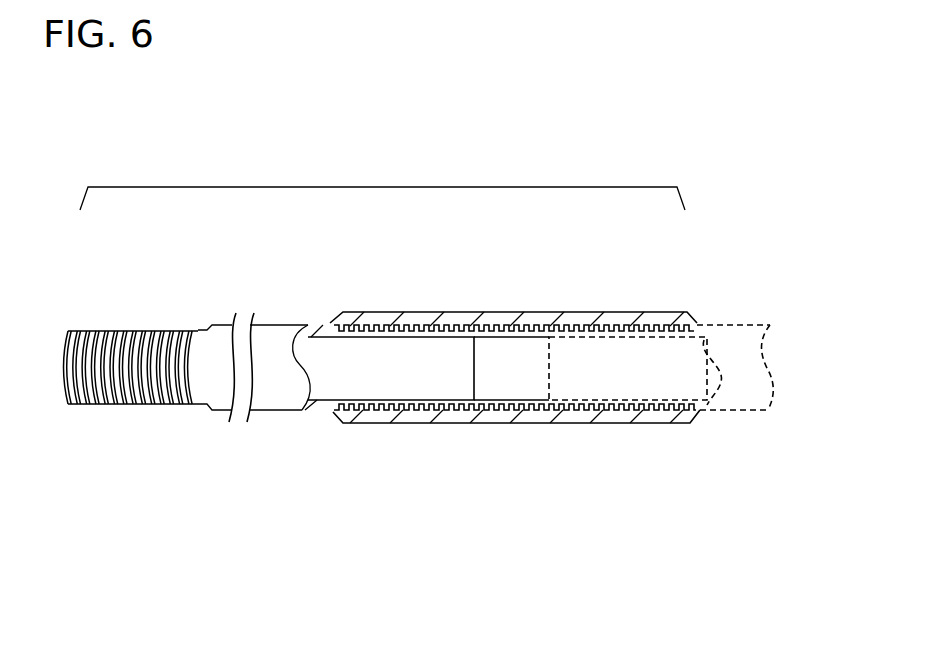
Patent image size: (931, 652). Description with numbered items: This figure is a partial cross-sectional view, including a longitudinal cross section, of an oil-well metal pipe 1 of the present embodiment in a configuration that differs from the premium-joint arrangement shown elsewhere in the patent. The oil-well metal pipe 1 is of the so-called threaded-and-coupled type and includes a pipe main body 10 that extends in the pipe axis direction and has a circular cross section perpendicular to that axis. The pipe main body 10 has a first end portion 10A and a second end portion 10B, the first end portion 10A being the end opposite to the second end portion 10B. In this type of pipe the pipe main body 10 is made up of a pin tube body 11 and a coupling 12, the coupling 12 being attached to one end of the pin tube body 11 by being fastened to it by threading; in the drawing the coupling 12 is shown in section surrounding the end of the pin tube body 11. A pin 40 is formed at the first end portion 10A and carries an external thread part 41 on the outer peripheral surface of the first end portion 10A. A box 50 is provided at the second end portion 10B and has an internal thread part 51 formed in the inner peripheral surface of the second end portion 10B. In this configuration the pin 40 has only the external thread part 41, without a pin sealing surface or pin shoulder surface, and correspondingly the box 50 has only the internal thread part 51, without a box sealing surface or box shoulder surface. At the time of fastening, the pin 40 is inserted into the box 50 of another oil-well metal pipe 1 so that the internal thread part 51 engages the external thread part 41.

The oil-well metal pipe 1 is at (398, 96).
The pipe main body 10 is at (382, 179).
The first end portion 10A is at (135, 318).
The second end portion 10B is at (628, 294).
The pin tube body 11 is at (272, 332).
The coupling 12 is at (490, 318).
The pin 40 is at (112, 412).
The external thread part 41 is at (148, 410).
The box 50 is at (613, 428).
The internal thread part 51 is at (627, 402).